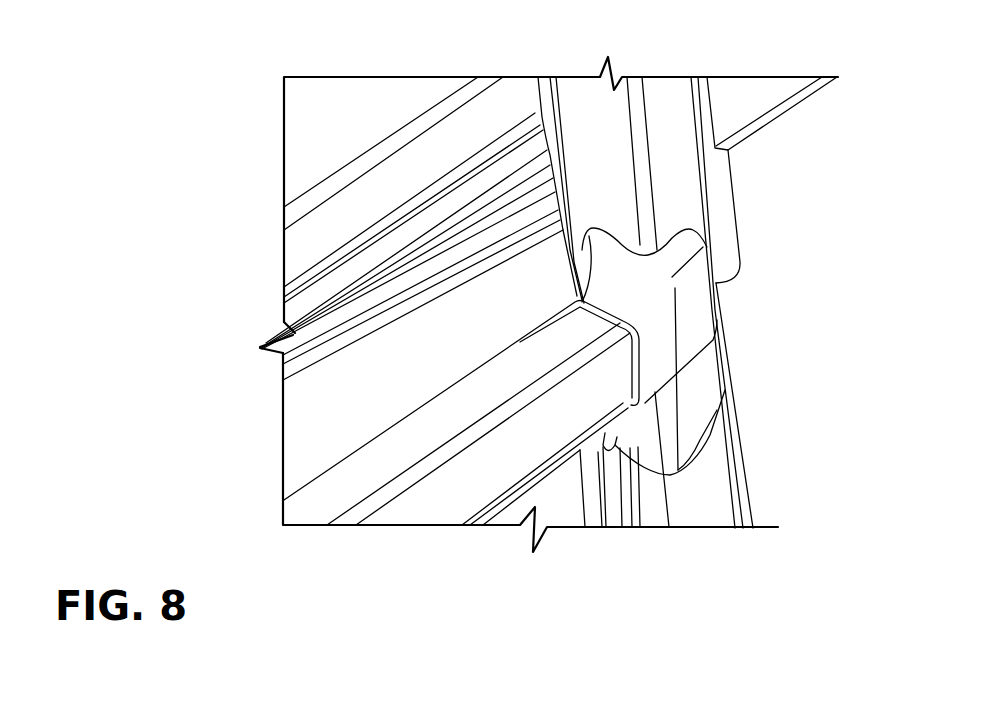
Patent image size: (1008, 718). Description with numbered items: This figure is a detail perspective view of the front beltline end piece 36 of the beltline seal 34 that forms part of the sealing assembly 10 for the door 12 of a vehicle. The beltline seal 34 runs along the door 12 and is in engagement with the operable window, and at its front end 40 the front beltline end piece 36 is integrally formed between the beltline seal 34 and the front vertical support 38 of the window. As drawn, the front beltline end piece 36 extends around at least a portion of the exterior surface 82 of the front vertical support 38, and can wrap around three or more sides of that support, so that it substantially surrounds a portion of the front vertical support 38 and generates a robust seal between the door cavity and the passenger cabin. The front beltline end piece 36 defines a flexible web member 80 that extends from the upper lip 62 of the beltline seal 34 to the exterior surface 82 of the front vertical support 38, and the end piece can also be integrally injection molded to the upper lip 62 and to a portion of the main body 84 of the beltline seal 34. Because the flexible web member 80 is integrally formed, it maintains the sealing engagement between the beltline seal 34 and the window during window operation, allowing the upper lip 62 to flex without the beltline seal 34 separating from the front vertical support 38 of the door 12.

The sealing assembly 10 is at (506, 534).
The door 12 is at (363, 70).
The beltline seal 34 is at (370, 443).
The front beltline end piece 36 is at (695, 291).
The front vertical support 38 is at (600, 136).
The front end 40 is at (615, 372).
The upper lip 62 is at (392, 348).
The flexible web member 80 is at (598, 232).
The exterior surface 82 is at (620, 186).
The main body 84 is at (445, 488).